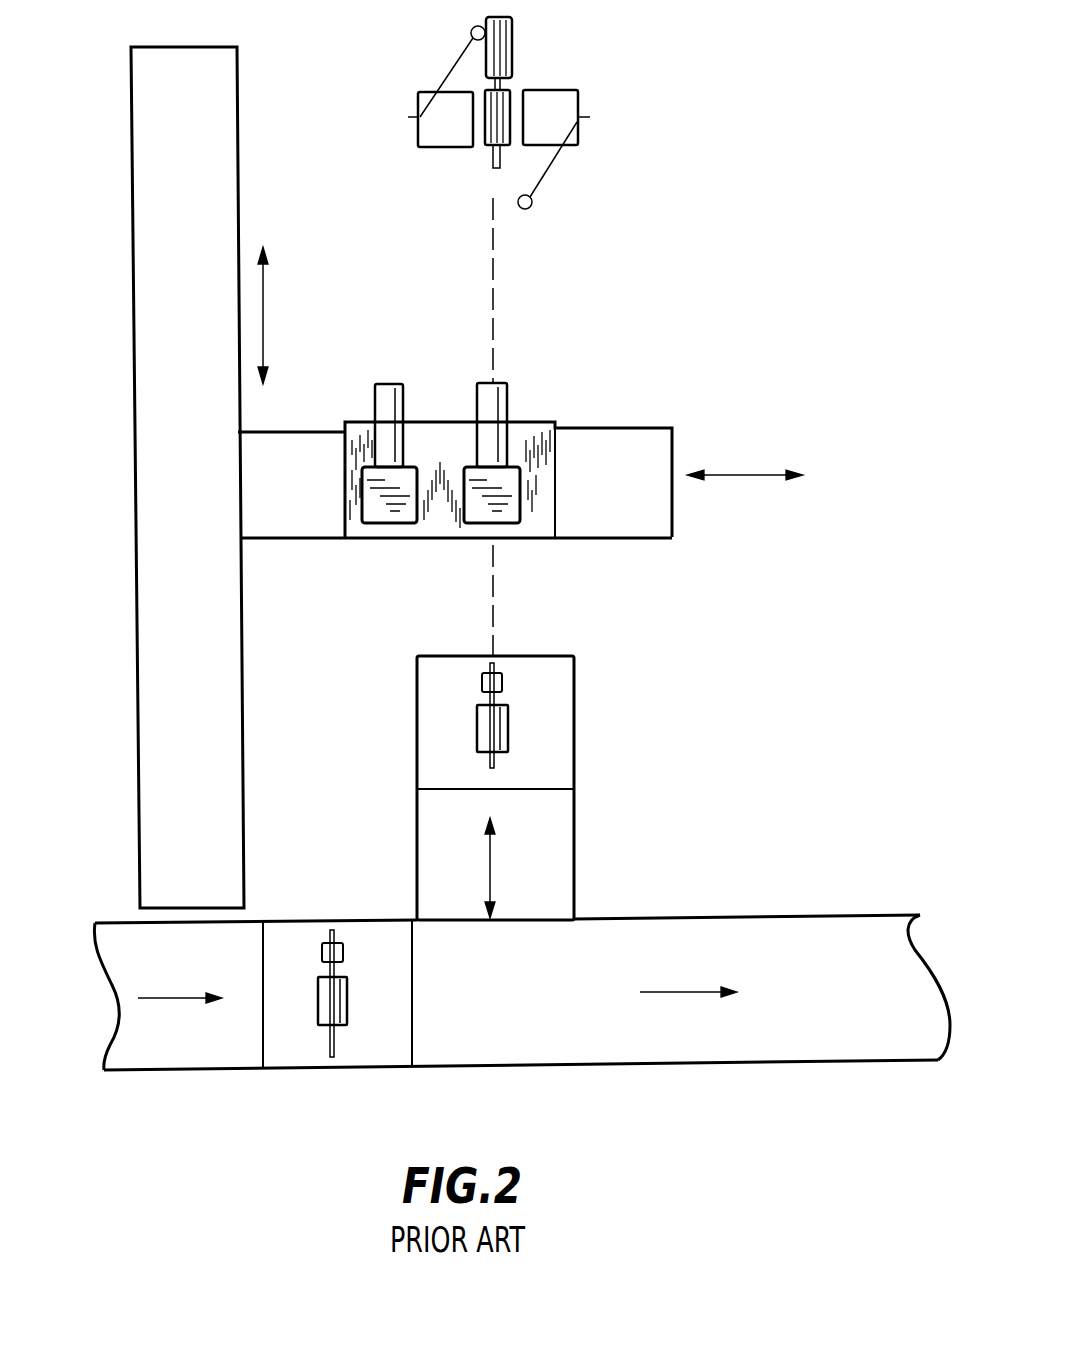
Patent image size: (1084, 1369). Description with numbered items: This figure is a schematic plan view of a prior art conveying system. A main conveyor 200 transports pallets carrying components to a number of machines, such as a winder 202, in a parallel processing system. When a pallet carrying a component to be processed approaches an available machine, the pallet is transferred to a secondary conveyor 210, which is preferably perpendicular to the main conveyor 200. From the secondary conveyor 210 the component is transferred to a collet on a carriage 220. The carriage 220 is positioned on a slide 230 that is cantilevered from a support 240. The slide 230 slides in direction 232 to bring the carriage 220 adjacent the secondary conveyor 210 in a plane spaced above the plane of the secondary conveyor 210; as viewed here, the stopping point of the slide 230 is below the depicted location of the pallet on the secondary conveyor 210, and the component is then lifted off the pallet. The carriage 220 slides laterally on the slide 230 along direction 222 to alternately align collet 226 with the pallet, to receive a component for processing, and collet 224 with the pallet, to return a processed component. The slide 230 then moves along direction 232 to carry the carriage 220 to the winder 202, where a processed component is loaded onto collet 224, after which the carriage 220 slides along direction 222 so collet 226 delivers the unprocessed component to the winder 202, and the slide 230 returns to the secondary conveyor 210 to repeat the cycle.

The main conveyor 200 is at (538, 1040).
The winder 202 is at (592, 72).
The secondary conveyor 210 is at (557, 893).
The carriage 220 is at (555, 423).
The direction 222 is at (547, 483).
The collet 224 is at (393, 512).
The collet 226 is at (512, 500).
The slide 230 is at (270, 522).
The direction 232 is at (265, 345).
The support 240 is at (197, 200).